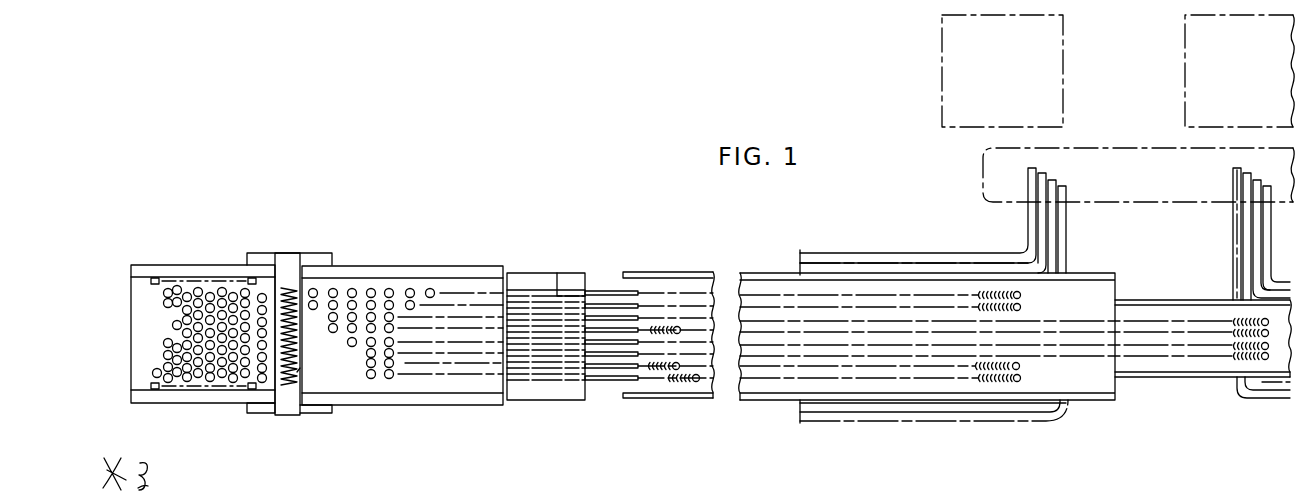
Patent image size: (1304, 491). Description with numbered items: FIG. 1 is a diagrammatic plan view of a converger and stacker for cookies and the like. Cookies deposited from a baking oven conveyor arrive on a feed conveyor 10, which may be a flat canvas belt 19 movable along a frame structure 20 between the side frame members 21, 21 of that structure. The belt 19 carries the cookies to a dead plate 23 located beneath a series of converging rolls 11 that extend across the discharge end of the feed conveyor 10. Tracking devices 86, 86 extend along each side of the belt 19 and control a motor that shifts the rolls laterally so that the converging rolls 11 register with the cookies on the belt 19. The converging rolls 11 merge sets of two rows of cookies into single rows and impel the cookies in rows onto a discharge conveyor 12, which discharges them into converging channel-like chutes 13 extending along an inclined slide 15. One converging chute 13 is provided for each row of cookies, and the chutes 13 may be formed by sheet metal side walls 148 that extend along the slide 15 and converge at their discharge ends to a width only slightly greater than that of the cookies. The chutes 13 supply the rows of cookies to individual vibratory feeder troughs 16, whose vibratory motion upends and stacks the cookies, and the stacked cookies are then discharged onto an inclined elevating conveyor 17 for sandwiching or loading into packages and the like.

The feed conveyor 10 is at (127, 378).
The converging rolls 11 is at (288, 288).
The discharge conveyor 12 is at (435, 378).
The converging chutes 13 is at (517, 288).
The inclined slide 15 is at (573, 292).
The vibratory feeder troughs 16 is at (638, 310).
The inclined elevating conveyor 17 is at (770, 401).
The flat canvas belt 19 is at (138, 297).
The frame structure 20 is at (226, 265).
The side frame members 21 is at (180, 265).
The dead plate 23 is at (300, 368).
The tracking devices 86 is at (155, 278).
The sheet metal side walls 148 is at (528, 288).